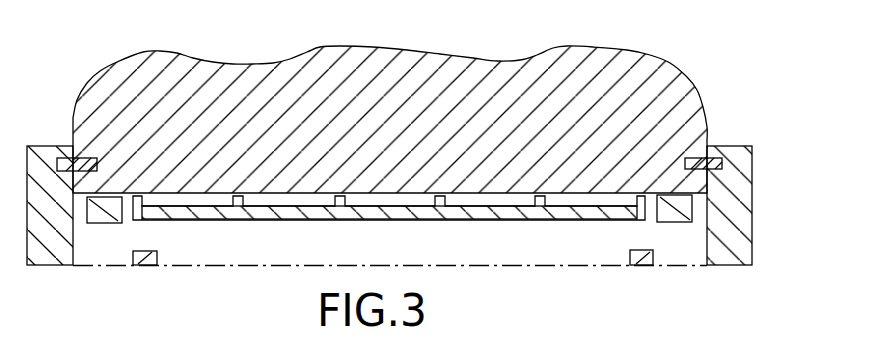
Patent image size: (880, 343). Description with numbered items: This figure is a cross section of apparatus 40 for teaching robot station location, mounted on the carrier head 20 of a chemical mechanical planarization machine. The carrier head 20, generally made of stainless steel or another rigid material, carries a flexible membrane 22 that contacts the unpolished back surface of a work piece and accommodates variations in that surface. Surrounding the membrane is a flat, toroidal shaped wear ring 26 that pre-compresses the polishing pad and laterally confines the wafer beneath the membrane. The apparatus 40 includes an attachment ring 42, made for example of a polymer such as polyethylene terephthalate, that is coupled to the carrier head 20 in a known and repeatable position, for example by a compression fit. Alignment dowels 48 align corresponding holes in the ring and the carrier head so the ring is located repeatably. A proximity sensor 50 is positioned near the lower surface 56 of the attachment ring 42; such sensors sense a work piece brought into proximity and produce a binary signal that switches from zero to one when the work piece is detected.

The carrier head 20 is at (650, 65).
The flexible membrane 22 is at (480, 221).
The wear ring 26 is at (670, 217).
The apparatus for teaching robot station location 40 is at (750, 225).
The attachment ring 42 is at (742, 168).
The alignment dowels 48 is at (81, 156).
The proximity sensor 50 is at (642, 258).
The lower surface of the attachment ring 56 is at (47, 266).